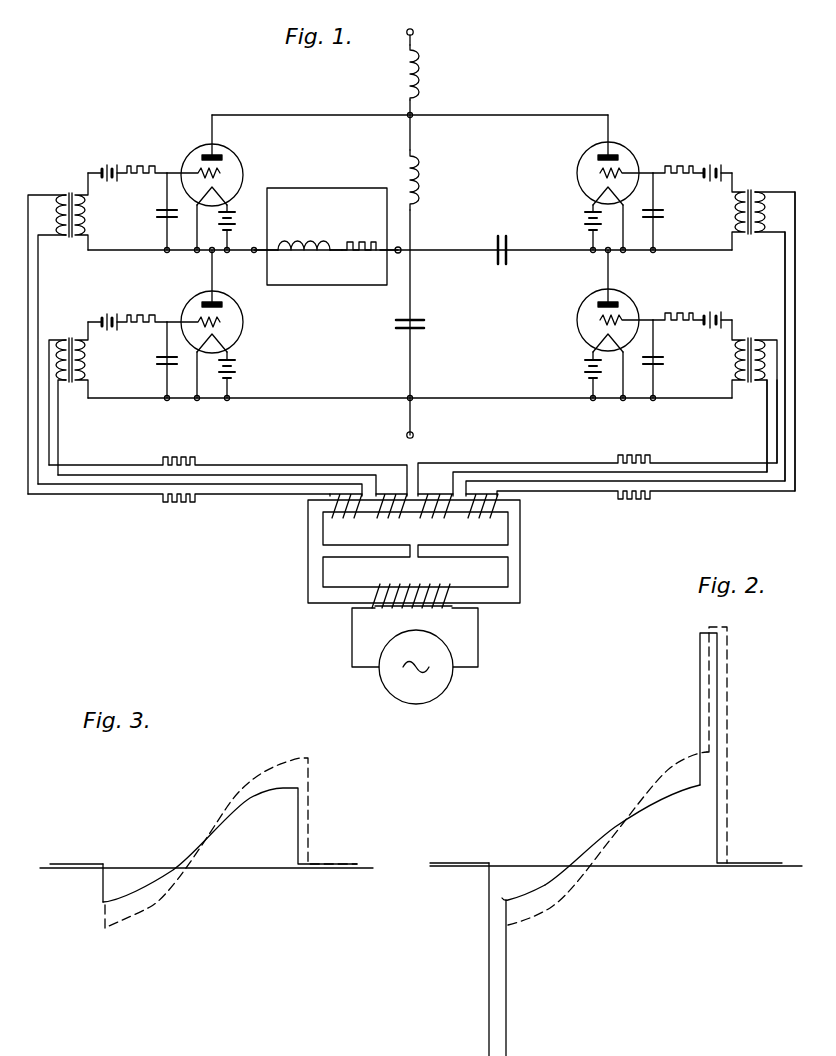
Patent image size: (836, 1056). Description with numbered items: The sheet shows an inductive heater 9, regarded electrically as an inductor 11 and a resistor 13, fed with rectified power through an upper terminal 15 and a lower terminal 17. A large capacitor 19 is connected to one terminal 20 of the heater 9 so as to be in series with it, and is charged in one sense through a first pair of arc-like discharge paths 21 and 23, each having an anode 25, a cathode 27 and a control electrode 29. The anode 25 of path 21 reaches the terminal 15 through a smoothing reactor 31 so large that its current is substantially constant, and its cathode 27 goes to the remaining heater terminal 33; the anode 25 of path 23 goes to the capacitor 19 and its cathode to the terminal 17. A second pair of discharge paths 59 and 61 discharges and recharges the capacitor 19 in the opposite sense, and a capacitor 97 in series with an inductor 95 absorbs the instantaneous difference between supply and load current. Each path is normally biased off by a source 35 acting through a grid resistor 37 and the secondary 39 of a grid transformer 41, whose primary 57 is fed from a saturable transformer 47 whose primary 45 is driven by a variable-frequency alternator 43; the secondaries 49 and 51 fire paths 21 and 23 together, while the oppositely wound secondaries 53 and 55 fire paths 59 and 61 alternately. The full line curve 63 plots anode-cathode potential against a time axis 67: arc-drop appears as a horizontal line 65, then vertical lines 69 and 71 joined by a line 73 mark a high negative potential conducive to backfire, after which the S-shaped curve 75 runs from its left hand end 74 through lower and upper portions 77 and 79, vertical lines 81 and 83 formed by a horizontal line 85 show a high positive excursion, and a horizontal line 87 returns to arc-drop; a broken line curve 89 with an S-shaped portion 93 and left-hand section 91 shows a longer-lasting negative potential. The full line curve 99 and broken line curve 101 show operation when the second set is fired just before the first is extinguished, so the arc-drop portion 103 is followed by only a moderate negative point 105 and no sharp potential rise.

In FIG. 1, the inductive heater 9 is at (326, 227).
In FIG. 1, the inductor 11 is at (300, 256).
In FIG. 1, the resistor 13 is at (360, 257).
In FIG. 1, the terminal 15 is at (414, 32).
In FIG. 1, the terminal 17 is at (414, 433).
In FIG. 1, the capacitor 19 is at (510, 228).
In FIG. 1, the terminal of the heater 20 is at (402, 246).
In FIG. 1, the electric discharge path 21 is at (242, 156).
In FIG. 1, the electric discharge path 23 is at (650, 290).
In FIG. 1, the anode 25 is at (205, 150).
In FIG. 1, the cathode 27 is at (198, 200).
In FIG. 1, the control electrode 29 is at (200, 170).
In FIG. 1, the smoothing reactor 31 is at (420, 82).
In FIG. 1, the terminal of the heater 33 is at (252, 236).
In FIG. 1, the source of biasing potential 35 is at (130, 182).
In FIG. 1, the grid resistor 37 is at (142, 165).
In FIG. 1, the secondary of grid transformer 39 is at (78, 236).
In FIG. 1, the grid transformer 41 is at (412, 326).
In FIG. 1, the alternator 43 is at (450, 685).
In FIG. 1, the primary of saturable transformer 45 is at (370, 610).
In FIG. 1, the saturable transformer 47 is at (414, 551).
In FIG. 1, the secondary winding 49 is at (364, 527).
In FIG. 1, the secondary winding 51 is at (450, 518).
In FIG. 1, the secondary winding 53 is at (390, 494).
In FIG. 1, the secondary winding 55 is at (476, 494).
In FIG. 1, the primary of grid transformer 57 is at (760, 374).
In FIG. 1, the electric discharge path 59 is at (632, 152).
In FIG. 1, the electric discharge path 61 is at (200, 275).
In FIG. 2, the full line curve 63 is at (594, 850).
In FIG. 2, the horizontal line 65 is at (472, 862).
In FIG. 2, the time axis 67 is at (646, 869).
In FIG. 3, the time axis 67 is at (236, 870).
In FIG. 2, the vertical line 69 is at (488, 956).
In FIG. 2, the vertical line 71 is at (506, 968).
In FIG. 2, the horizontal line 73 is at (510, 1055).
In FIG. 2, the left hand end of S-shaped curve 74 is at (521, 887).
In FIG. 2, the S-shaped curve 75 is at (574, 856).
In FIG. 2, the lower portion of S-shaped curve 77 is at (540, 890).
In FIG. 2, the upper portion of S-shaped curve 79 is at (654, 798).
In FIG. 2, the vertical line 81 is at (699, 664).
In FIG. 2, the vertical line 83 is at (717, 660).
In FIG. 2, the horizontal line 85 is at (708, 630).
In FIG. 2, the horizontal line 87 is at (770, 850).
In FIG. 2, the broken line curve 89 is at (592, 852).
In FIG. 2, the left-hand section 91 is at (566, 895).
In FIG. 2, the S-shaped portion 93 is at (584, 878).
In FIG. 1, the inductor 95 is at (418, 160).
In FIG. 1, the capacitor 97 is at (425, 326).
In FIG. 3, the full line curve 99 is at (137, 892).
In FIG. 3, the broken line curve 101 is at (177, 873).
In FIG. 3, the horizontal portion 103 is at (82, 852).
In FIG. 3, the point 105 is at (103, 902).